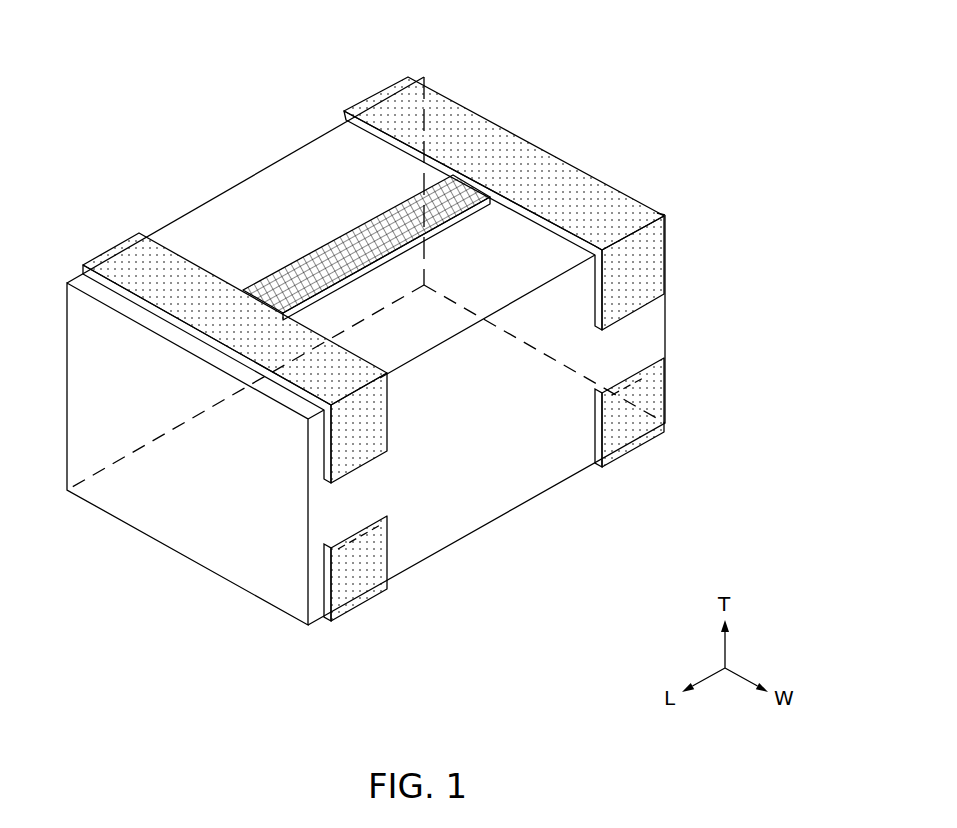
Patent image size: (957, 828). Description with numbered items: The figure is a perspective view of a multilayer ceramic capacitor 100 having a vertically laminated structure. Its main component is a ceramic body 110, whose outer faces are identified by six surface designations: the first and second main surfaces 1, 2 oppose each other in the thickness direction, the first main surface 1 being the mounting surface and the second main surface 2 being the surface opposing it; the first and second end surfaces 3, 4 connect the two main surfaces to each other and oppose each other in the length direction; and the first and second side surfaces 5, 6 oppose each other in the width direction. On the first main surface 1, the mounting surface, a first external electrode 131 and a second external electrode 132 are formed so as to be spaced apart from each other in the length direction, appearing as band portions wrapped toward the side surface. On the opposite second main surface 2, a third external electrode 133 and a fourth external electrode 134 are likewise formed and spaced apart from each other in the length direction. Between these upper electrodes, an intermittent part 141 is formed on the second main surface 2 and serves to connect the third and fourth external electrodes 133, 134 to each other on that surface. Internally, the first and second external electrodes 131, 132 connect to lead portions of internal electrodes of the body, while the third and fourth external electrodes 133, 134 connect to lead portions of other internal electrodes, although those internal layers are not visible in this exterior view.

The multilayer ceramic capacitor 100 is at (143, 27).
The ceramic body 110 is at (323, 152).
The first main surface 1 is at (435, 502).
The second main surface 2 is at (388, 182).
The first end surface 3 is at (194, 489).
The second end surface 4 is at (518, 254).
The first side surface 5 is at (286, 206).
The second side surface 6 is at (520, 448).
The first external electrode 131 is at (360, 595).
The second external electrode 132 is at (630, 441).
The third external electrode 133 is at (122, 252).
The fourth external electrode 134 is at (393, 95).
The intermittent part 141 is at (310, 282).